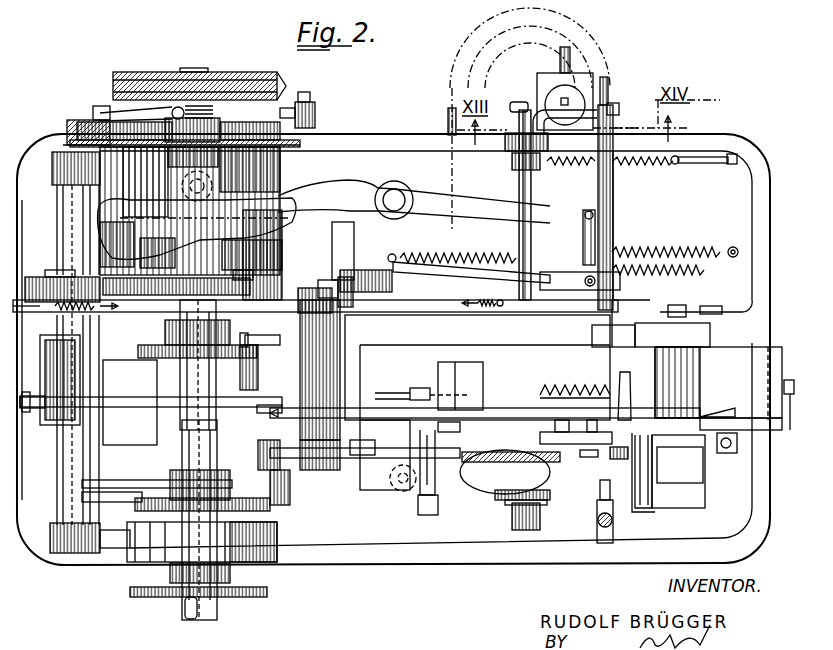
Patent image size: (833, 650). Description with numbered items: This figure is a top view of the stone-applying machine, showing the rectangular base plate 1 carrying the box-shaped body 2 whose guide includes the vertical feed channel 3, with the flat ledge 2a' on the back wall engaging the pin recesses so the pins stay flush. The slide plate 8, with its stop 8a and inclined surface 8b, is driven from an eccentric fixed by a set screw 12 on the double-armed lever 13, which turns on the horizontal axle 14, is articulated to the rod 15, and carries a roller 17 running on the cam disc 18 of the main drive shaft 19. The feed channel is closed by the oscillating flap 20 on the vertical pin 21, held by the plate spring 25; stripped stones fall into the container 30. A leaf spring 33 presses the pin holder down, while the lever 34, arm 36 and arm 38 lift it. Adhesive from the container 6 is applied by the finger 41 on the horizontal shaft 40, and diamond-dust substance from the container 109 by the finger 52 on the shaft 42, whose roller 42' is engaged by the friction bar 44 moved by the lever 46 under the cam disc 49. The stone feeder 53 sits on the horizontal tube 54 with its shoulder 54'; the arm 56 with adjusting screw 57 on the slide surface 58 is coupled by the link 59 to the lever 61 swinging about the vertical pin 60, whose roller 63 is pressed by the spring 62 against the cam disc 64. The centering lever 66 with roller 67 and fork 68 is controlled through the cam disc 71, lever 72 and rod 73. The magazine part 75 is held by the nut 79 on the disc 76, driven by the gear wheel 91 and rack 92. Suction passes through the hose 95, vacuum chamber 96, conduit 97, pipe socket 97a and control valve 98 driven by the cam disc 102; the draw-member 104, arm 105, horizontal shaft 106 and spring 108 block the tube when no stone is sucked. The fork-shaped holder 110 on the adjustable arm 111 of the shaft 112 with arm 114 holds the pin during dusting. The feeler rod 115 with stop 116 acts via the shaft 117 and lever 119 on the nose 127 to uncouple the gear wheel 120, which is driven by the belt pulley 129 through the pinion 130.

The base plate 1 is at (455, 550).
The box-shaped body 2 is at (755, 418).
The flat ledge 2a' is at (625, 314).
The vertical feed channel 3 is at (682, 375).
The container 6 is at (635, 510).
The slide plate 8 is at (705, 338).
The stop 8a is at (700, 307).
The inclined surface 8b is at (674, 306).
The set screw 12 is at (30, 414).
The double-armed lever 13 is at (42, 358).
The horizontal axle 14 is at (56, 218).
The rod 15 is at (127, 407).
The roller 17 is at (38, 276).
The cam disc 18 is at (250, 286).
The main drive shaft 19 is at (200, 385).
The oscillating flap 20 is at (698, 442).
The vertical pin 21 is at (726, 455).
The plate spring 25 is at (712, 413).
The container 30 is at (700, 480).
The leaf spring 33 is at (458, 362).
The lever 34 is at (420, 390).
The arm 36 is at (386, 392).
The arm of double-armed lever 38 is at (370, 270).
The horizontal shaft 40 is at (488, 420).
The finger 41 is at (652, 495).
The shaft 42 is at (317, 465).
The roller 42' is at (255, 455).
The friction bar 44 is at (278, 492).
The lever 46 is at (127, 487).
The cam disc 49 is at (138, 504).
The finger 52 is at (436, 492).
The stone feeder 53 is at (597, 500).
The horizontal tube 54 is at (630, 207).
The shoulder 54' is at (629, 99).
The arm 56 is at (490, 262).
The adjusting screw 57 is at (327, 283).
The horizontal slide surface 58 is at (343, 251).
The link 59 is at (585, 232).
The vertical pin 60 is at (396, 198).
The lever 61 is at (348, 192).
The spring 62 is at (446, 252).
The roller 63 is at (182, 199).
The cam disc 64 is at (212, 259).
The centering lever 66 is at (562, 448).
The roller 67 is at (592, 448).
The fork 68 is at (620, 460).
The cam disc 71 is at (147, 358).
The lever 72 is at (255, 370).
The rod 73 is at (256, 348).
The magazine part 75 is at (512, 470).
The disc 76 is at (482, 457).
The nut 79 is at (514, 528).
The gear wheel 91 is at (580, 283).
The rack 92 is at (124, 312).
The hose 95 is at (505, 38).
The vacuum chamber 96 is at (545, 90).
The conduit 97 is at (186, 432).
The pipe socket 97a is at (185, 613).
The control valve 98 is at (270, 578).
The cam disc 102 is at (130, 592).
The draw-member 104 is at (570, 102).
The arm 105 is at (545, 102).
The horizontal shaft 106 is at (520, 212).
The spring 108 is at (583, 168).
The container 109 is at (418, 500).
The fork-shaped holder 110 is at (440, 430).
The adjustable arm 111 is at (396, 432).
The shaft 112 is at (330, 470).
The arm 114 is at (348, 308).
The feeler rod 115 is at (265, 404).
The stop 116 is at (620, 388).
The shaft 117 is at (304, 108).
The lever 119 is at (298, 114).
The gear wheel 120 is at (85, 122).
The nose 127 is at (100, 114).
The belt pulley 129 is at (163, 65).
The pinion 130 is at (255, 100).